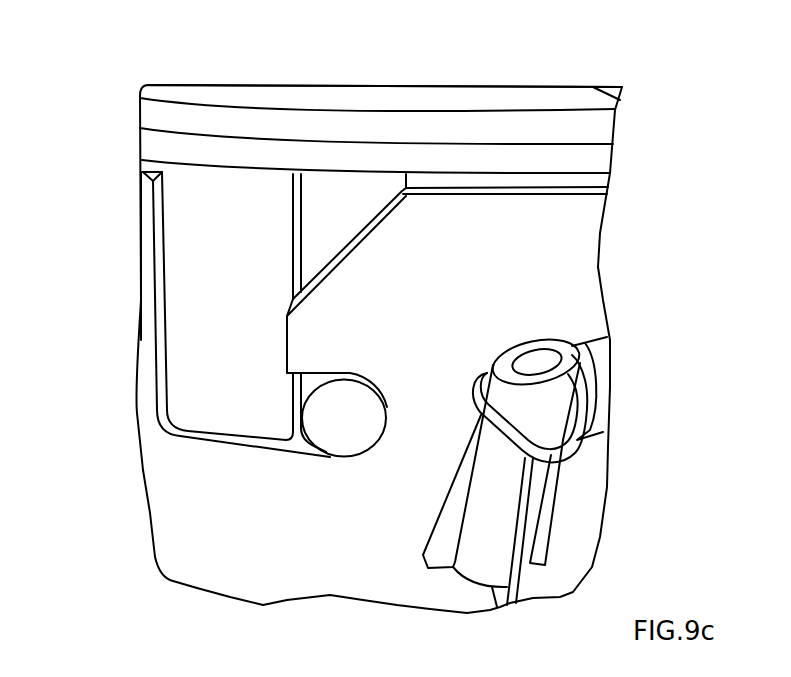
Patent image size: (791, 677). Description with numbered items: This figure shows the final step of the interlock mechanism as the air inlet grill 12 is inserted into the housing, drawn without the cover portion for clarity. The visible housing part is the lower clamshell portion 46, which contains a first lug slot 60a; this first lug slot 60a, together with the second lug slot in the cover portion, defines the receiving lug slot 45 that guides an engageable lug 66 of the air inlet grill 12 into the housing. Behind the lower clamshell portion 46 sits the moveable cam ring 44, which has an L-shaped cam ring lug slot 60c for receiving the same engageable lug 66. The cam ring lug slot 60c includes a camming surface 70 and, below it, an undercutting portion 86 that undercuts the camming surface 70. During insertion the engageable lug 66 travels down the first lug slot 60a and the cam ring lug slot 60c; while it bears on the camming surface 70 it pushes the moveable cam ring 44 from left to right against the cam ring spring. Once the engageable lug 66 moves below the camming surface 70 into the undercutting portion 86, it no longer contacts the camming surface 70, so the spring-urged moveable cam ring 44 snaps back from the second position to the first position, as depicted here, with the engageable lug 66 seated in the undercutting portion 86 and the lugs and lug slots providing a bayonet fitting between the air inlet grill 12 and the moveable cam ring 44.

The air inlet grill 12 is at (385, 160).
The moveable cam ring 44 is at (553, 310).
The receiving lug slot 45 is at (116, 205).
The lower clamshell portion 46 is at (197, 203).
The first lug slot 60a is at (293, 193).
The cam ring lug slot 60c is at (157, 277).
The engageable lug 66 is at (345, 427).
The camming surface 70 is at (383, 217).
The undercutting portion 86 is at (387, 408).